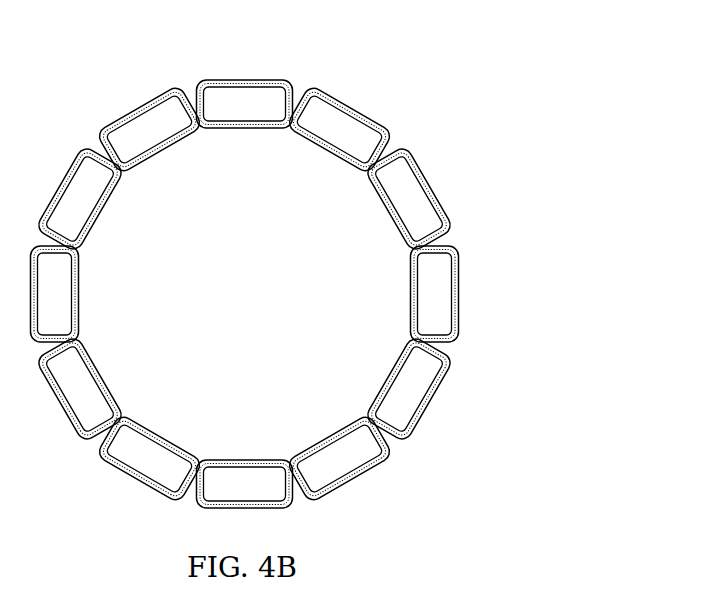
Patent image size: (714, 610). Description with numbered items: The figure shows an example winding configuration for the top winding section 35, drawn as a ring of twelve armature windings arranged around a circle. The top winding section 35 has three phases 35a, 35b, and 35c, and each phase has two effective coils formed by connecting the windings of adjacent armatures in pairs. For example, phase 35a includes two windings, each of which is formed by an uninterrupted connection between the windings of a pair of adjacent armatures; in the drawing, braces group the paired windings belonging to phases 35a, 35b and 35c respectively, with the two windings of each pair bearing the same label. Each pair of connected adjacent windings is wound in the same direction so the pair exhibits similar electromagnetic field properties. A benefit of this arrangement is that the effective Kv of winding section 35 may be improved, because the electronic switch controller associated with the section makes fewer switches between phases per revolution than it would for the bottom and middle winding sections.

The top winding section 35 is at (321, 262).
The phase 35a is at (363, 97).
The phase 35b is at (430, 188).
The phase 35c is at (430, 397).